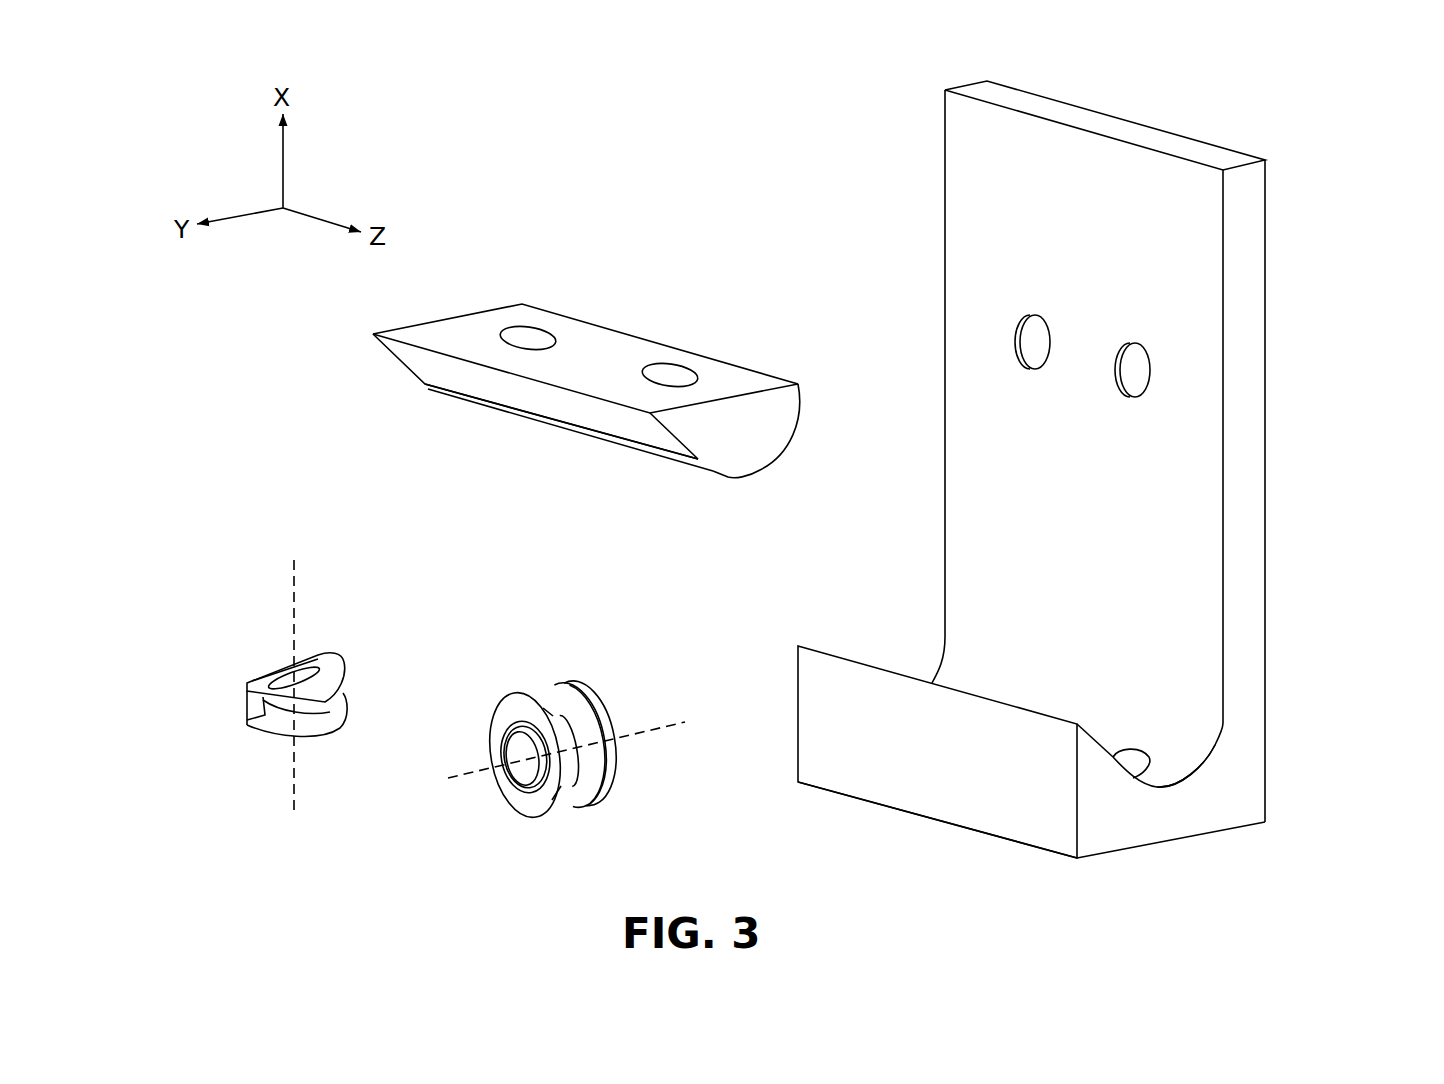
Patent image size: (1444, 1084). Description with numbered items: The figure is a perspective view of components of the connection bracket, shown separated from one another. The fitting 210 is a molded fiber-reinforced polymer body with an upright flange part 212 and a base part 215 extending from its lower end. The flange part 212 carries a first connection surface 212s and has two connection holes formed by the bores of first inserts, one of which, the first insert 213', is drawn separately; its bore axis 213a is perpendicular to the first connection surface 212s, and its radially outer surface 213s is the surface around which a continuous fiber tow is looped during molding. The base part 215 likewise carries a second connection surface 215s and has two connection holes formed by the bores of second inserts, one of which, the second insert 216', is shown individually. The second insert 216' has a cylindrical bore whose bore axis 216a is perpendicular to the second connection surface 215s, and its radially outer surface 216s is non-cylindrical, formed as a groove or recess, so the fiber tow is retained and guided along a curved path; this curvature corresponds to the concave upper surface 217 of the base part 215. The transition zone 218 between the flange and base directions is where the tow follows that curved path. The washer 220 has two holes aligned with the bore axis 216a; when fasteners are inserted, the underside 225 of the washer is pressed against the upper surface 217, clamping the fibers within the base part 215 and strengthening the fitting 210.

The fitting 210 is at (1155, 110).
The flange part 212 is at (993, 263).
The first connection surface 212s is at (1278, 233).
The base part 215 is at (1175, 815).
The second connection surface 215s is at (923, 826).
The upper surface of the base part 217 is at (1173, 755).
The transition zone 218 is at (1240, 770).
The washer 220 is at (608, 357).
The underside of the washer 225 is at (557, 432).
The second insert 216' is at (359, 680).
The bore axis of the second insert 216a is at (293, 595).
The radially outer surface of the second insert 216s is at (252, 710).
The first insert 213' is at (501, 777).
The bore axis of the first insert 213a is at (655, 727).
The radially outer surface of the first insert 213s is at (612, 780).